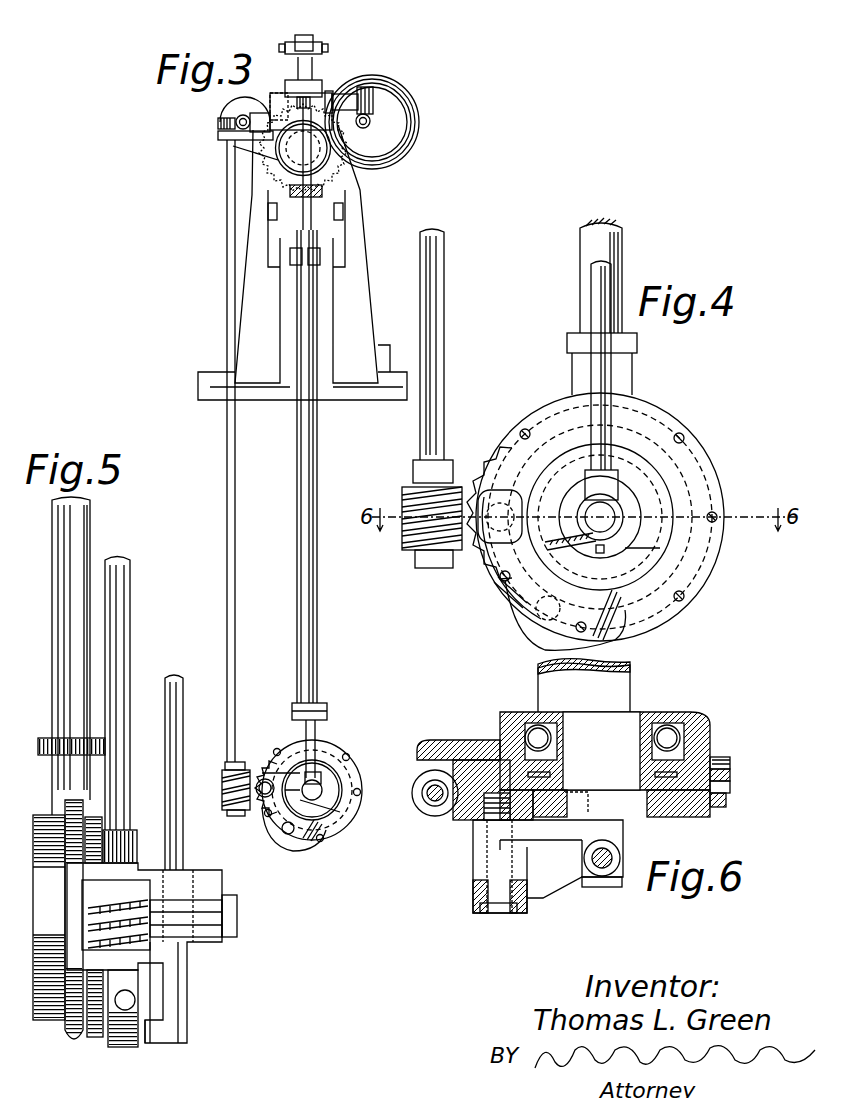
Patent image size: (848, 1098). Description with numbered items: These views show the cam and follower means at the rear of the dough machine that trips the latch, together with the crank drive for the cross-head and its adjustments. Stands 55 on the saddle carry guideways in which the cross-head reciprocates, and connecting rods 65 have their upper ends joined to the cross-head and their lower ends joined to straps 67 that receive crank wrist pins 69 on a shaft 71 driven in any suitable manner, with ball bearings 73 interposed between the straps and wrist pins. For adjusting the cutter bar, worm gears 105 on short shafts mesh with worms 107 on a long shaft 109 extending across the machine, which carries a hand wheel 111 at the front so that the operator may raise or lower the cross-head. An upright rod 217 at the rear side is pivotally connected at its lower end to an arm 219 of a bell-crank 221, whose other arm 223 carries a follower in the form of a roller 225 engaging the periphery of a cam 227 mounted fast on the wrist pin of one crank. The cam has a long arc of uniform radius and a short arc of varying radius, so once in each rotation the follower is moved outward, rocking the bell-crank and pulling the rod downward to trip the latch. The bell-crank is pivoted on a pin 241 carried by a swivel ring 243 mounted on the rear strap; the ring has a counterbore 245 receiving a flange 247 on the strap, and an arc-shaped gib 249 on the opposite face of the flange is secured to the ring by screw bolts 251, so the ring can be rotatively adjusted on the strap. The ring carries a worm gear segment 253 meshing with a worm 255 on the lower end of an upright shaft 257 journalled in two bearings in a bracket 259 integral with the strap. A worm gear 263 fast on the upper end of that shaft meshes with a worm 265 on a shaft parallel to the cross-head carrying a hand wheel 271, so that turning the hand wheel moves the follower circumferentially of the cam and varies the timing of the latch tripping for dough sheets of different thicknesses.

In FIG. 3, the stand 55 is at (364, 212).
In FIG. 3, the connecting rod 65 is at (297, 549).
In FIG. 4, the connecting rod 65 is at (622, 240).
In FIG. 5, the connecting rod 65 is at (90, 592).
In FIG. 4, the strap 67 is at (712, 494).
In FIG. 6, the strap 67 is at (715, 748).
In FIG. 5, the strap 67 is at (52, 1020).
In FIG. 4, the crank wrist pin 69 is at (640, 503).
In FIG. 6, the crank wrist pin 69 is at (620, 718).
In FIG. 3, the shaft 71 is at (332, 732).
In FIG. 6, the shaft 71 is at (626, 684).
In FIG. 6, the ball bearing 73 is at (672, 730).
In FIG. 3, the worm gear 105 is at (367, 86).
In FIG. 3, the worm 107 is at (371, 121).
In FIG. 3, the long shaft 109 is at (371, 126).
In FIG. 3, the hand wheel 111 is at (400, 93).
In FIG. 3, the upright rod 217 is at (313, 646).
In FIG. 4, the upright rod 217 is at (606, 372).
In FIG. 6, the upright rod 217 is at (606, 876).
In FIG. 5, the upright rod 217 is at (183, 737).
In FIG. 3, the arm 219 is at (320, 778).
In FIG. 4, the arm 219 is at (648, 438).
In FIG. 6, the arm 219 is at (597, 826).
In FIG. 6, the bell-crank 221 is at (482, 838).
In FIG. 4, the arm 223 is at (513, 597).
In FIG. 3, the roller 225 is at (293, 851).
In FIG. 4, the roller 225 is at (540, 648).
In FIG. 6, the roller 225 is at (588, 792).
In FIG. 5, the roller 225 is at (135, 1005).
In FIG. 3, the cam 227 is at (340, 812).
In FIG. 4, the cam 227 is at (660, 548).
In FIG. 6, the cam 227 is at (652, 820).
In FIG. 6, the pin 241 is at (486, 868).
In FIG. 5, the pin 241 is at (222, 915).
In FIG. 4, the ring 243 is at (700, 575).
In FIG. 6, the ring 243 is at (693, 817).
In FIG. 6, the counterbore 245 is at (731, 778).
In FIG. 6, the flange 247 is at (731, 790).
In FIG. 4, the arc-shaped gib 249 is at (705, 450).
In FIG. 6, the arc-shaped gib 249 is at (500, 735).
In FIG. 4, the screw bolt 251 is at (528, 432).
In FIG. 6, the screw bolt 251 is at (716, 808).
In FIG. 3, the worm gear segment 253 is at (266, 813).
In FIG. 4, the worm gear segment 253 is at (472, 592).
In FIG. 6, the worm gear segment 253 is at (470, 820).
In FIG. 5, the worm gear segment 253 is at (163, 1017).
In FIG. 3, the worm 255 is at (225, 790).
In FIG. 4, the worm 255 is at (402, 540).
In FIG. 6, the worm 255 is at (414, 806).
In FIG. 5, the worm 255 is at (150, 912).
In FIG. 3, the upright shaft 257 is at (229, 588).
In FIG. 4, the upright shaft 257 is at (444, 342).
In FIG. 6, the upright shaft 257 is at (418, 780).
In FIG. 5, the upright shaft 257 is at (128, 660).
In FIG. 4, the bracket 259 is at (418, 566).
In FIG. 6, the bracket 259 is at (450, 742).
In FIG. 5, the bracket 259 is at (142, 868).
In FIG. 3, the worm gear 263 is at (226, 126).
In FIG. 3, the worm 265 is at (240, 118).
In FIG. 3, the hand wheel 271 is at (262, 140).